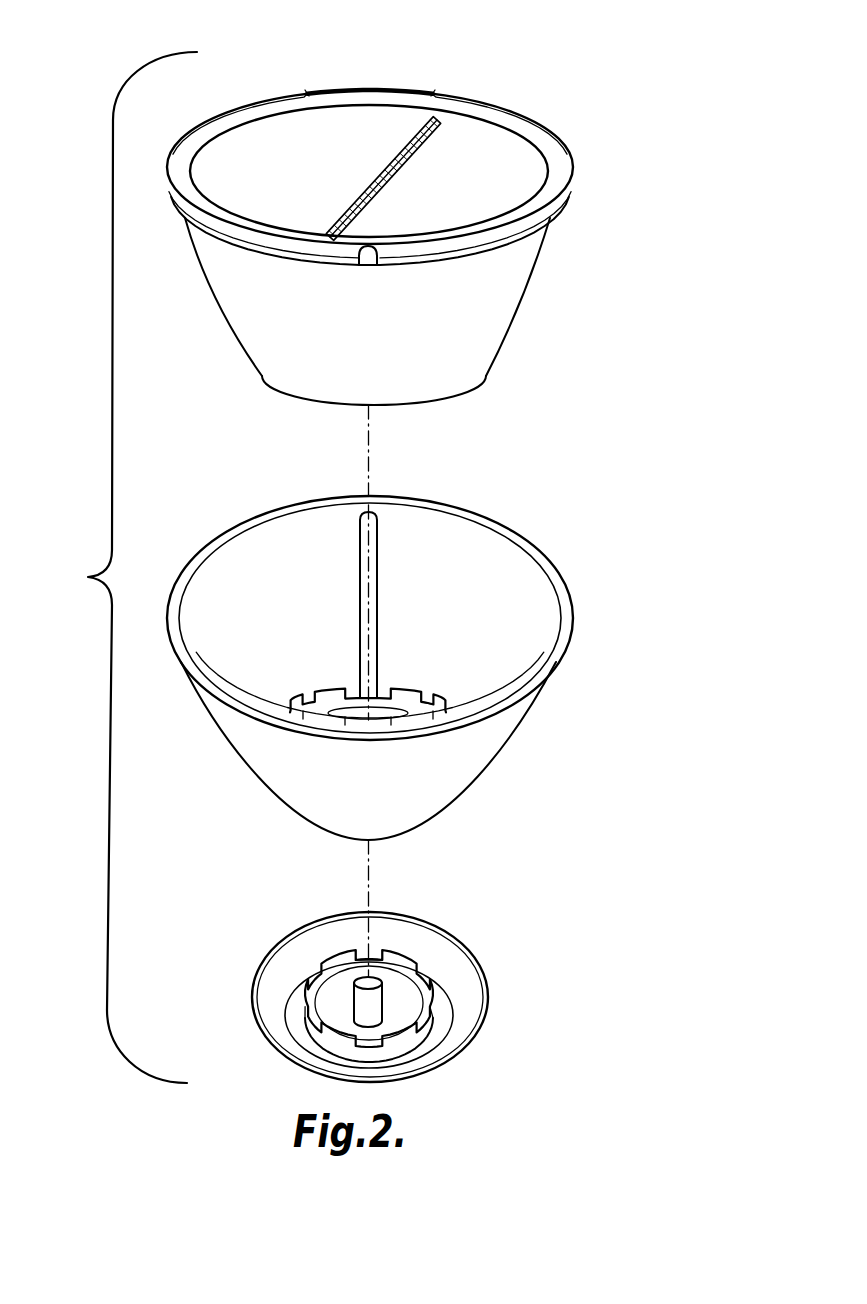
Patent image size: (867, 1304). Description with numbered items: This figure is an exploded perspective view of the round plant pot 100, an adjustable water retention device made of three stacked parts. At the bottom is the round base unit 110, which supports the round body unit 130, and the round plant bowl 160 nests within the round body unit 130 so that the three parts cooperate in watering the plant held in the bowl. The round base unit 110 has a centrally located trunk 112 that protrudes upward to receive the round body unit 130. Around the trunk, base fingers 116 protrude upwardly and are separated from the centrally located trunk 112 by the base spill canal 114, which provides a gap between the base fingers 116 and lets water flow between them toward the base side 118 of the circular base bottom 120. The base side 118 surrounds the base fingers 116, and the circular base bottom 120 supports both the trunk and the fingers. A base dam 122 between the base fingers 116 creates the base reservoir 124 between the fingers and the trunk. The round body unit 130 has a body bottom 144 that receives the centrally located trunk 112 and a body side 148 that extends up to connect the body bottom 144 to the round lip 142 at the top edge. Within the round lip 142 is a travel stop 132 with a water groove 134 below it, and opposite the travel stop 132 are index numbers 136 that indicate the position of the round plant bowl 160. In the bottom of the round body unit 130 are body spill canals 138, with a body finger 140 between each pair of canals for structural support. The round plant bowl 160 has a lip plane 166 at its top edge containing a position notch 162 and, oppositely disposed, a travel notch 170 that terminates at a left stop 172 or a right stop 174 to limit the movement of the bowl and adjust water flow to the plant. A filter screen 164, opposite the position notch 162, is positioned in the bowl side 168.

The round plant pot 100 is at (115, 567).
The round base unit 110 is at (497, 963).
The centrally located trunk 112 is at (380, 1000).
The base spill canal 114 is at (407, 962).
The base fingers 116 is at (348, 958).
The base side 118 is at (287, 967).
The circular base bottom 120 is at (332, 1008).
The base dam 122 is at (373, 953).
The base reservoir 124 is at (392, 1028).
The round body unit 130 is at (542, 532).
The travel stop 132 is at (369, 496).
The water groove 134 is at (372, 587).
The index numbers 136 is at (463, 720).
The body spill canals 138 is at (413, 689).
The body finger 140 is at (397, 688).
The round lip 142 is at (557, 638).
The body bottom 144 is at (350, 712).
The body side 148 is at (487, 570).
The round plant bowl 160 is at (563, 110).
The position notch 162 is at (368, 258).
The filter screen 164 is at (365, 185).
The lip plane 166 is at (541, 198).
The bowl side 168 is at (523, 188).
The travel notch 170 is at (372, 90).
The left stop 172 is at (312, 92).
The right stop 174 is at (424, 92).